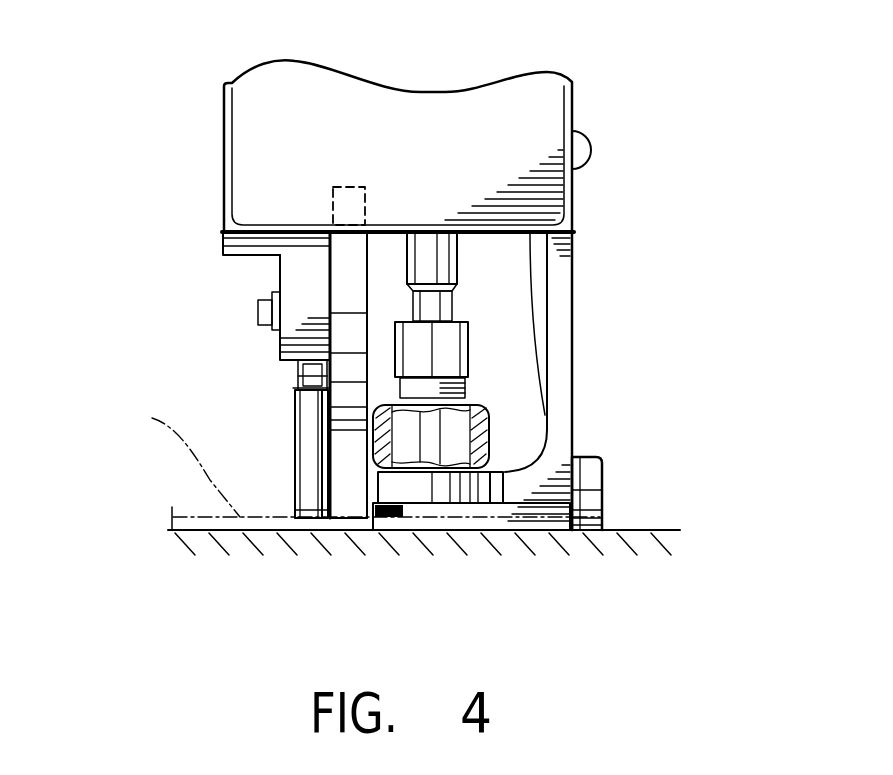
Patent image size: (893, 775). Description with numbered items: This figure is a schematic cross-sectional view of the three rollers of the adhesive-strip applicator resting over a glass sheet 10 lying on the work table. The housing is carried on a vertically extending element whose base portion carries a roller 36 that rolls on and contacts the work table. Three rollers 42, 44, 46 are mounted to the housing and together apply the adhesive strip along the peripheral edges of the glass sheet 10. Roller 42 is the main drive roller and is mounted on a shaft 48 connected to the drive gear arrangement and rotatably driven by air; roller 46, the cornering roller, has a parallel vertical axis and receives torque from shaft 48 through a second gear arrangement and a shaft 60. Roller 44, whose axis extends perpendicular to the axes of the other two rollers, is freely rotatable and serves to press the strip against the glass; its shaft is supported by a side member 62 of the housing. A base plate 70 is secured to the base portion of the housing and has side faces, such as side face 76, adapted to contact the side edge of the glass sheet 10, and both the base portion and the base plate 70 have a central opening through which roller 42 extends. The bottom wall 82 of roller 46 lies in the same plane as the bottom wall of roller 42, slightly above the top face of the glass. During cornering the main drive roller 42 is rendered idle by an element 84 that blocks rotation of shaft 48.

The glass sheet 10 is at (179, 457).
The roller 36 is at (585, 480).
The roller 42 is at (500, 467).
The roller 44 is at (350, 285).
The roller 46 is at (300, 440).
The shaft 48 is at (437, 268).
The shaft 60 is at (298, 372).
The side member 62 is at (223, 243).
The base plate 70 is at (515, 515).
The side face 76 is at (365, 517).
The bottom wall 82 is at (312, 518).
The element 84 is at (425, 440).